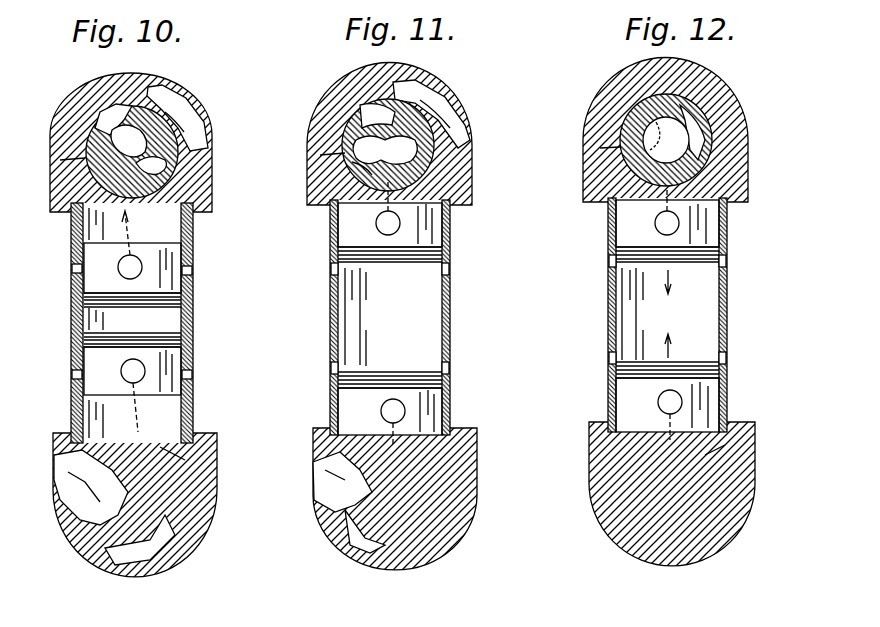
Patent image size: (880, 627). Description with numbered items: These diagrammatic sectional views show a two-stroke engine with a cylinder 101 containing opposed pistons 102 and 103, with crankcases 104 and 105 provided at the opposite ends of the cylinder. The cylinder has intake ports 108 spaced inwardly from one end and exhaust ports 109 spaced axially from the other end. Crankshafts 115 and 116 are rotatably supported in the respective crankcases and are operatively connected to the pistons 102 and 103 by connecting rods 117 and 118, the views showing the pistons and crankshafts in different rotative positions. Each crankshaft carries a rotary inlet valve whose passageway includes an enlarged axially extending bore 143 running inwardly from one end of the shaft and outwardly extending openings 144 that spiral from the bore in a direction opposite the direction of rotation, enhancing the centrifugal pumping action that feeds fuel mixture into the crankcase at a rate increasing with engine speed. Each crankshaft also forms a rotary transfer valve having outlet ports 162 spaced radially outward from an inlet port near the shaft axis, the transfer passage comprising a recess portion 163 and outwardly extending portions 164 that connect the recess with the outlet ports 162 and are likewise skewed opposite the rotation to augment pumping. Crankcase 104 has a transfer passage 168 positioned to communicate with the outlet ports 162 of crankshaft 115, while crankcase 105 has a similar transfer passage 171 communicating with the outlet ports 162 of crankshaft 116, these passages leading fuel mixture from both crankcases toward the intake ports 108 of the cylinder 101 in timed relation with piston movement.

In FIG. 10, the cylinder 101 is at (192, 313).
In FIG. 11, the cylinder 101 is at (450, 298).
In FIG. 12, the cylinder 101 is at (727, 300).
In FIG. 10, the piston 102 is at (170, 264).
In FIG. 11, the piston 102 is at (428, 224).
In FIG. 12, the piston 102 is at (697, 223).
In FIG. 10, the piston 103 is at (168, 382).
In FIG. 11, the piston 103 is at (430, 392).
In FIG. 12, the piston 103 is at (708, 393).
In FIG. 10, the crankcase 104 is at (180, 100).
In FIG. 11, the crankcase 104 is at (345, 88).
In FIG. 12, the crankcase 104 is at (715, 90).
In FIG. 10, the crankcase 105 is at (153, 563).
In FIG. 11, the crankcase 105 is at (455, 498).
In FIG. 12, the crankcase 105 is at (730, 508).
In FIG. 10, the intake ports 108 is at (76, 375).
In FIG. 11, the intake ports 108 is at (333, 368).
In FIG. 12, the intake ports 108 is at (610, 366).
In FIG. 10, the exhaust ports 109 is at (72, 248).
In FIG. 11, the exhaust ports 109 is at (446, 263).
In FIG. 12, the exhaust ports 109 is at (614, 264).
In FIG. 10, the crankshaft 115 is at (76, 161).
In FIG. 12, the crankshaft 115 is at (609, 151).
In FIG. 10, the crankshaft 116 is at (190, 465).
In FIG. 11, the crankshaft 116 is at (333, 157).
In FIG. 12, the crankshaft 116 is at (732, 472).
In FIG. 10, the connecting rod 117 is at (132, 213).
In FIG. 11, the connecting rod 117 is at (384, 212).
In FIG. 12, the connecting rod 117 is at (663, 212).
In FIG. 10, the connecting rod 118 is at (136, 405).
In FIG. 11, the connecting rod 118 is at (381, 412).
In FIG. 12, the connecting rod 118 is at (660, 412).
In FIG. 12, the axially extending bore 143 is at (669, 311).
In FIG. 12, the outwardly extending openings 144 is at (700, 140).
In FIG. 10, the outlet ports 162 is at (88, 97).
In FIG. 11, the outlet ports 162 is at (430, 132).
In FIG. 10, the recess portion 163 is at (150, 163).
In FIG. 11, the recess portion 163 is at (372, 163).
In FIG. 10, the outwardly extending portions 164 is at (120, 115).
In FIG. 11, the outwardly extending portions 164 is at (425, 146).
In FIG. 10, the transfer passage 168 is at (190, 126).
In FIG. 11, the transfer passage 168 is at (445, 100).
In FIG. 10, the transfer passage 171 is at (72, 492).
In FIG. 11, the transfer passage 171 is at (332, 503).